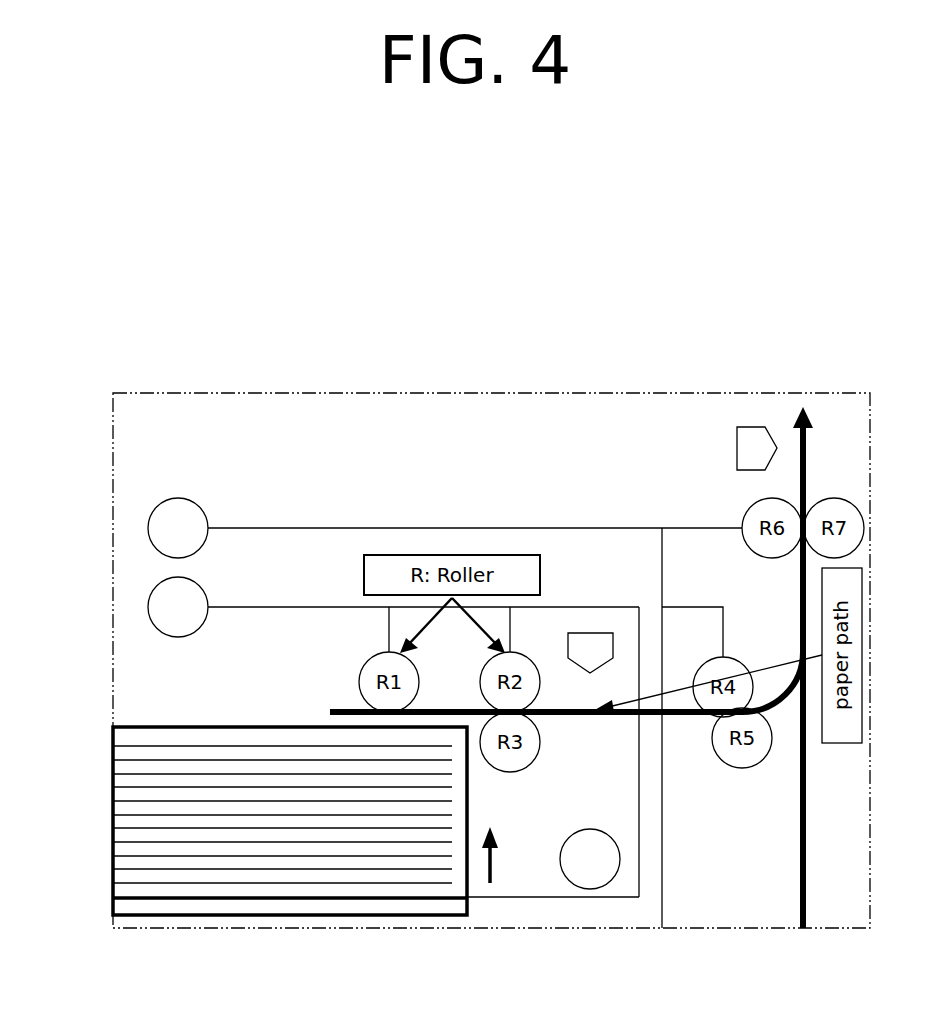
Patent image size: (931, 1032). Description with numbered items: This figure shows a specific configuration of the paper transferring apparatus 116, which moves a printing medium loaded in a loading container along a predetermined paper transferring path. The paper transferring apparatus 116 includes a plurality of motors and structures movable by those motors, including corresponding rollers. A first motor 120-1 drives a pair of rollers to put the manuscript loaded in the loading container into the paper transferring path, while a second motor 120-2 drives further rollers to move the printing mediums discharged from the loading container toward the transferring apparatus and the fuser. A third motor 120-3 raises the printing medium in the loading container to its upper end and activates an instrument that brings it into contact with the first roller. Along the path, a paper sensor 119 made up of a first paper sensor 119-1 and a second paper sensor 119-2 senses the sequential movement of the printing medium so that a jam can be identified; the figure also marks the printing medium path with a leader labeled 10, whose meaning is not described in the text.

The paper transferring apparatus 116 is at (485, 222).
The paper sensor 119 is at (674, 467).
The paper sensor S1 119-1 is at (590, 633).
The paper sensor S2 119-2 is at (748, 427).
The first motor 120-1 is at (148, 605).
The second motor 120-2 is at (148, 527).
The third motor 120-3 is at (590, 889).
The paper 10 is at (705, 714).